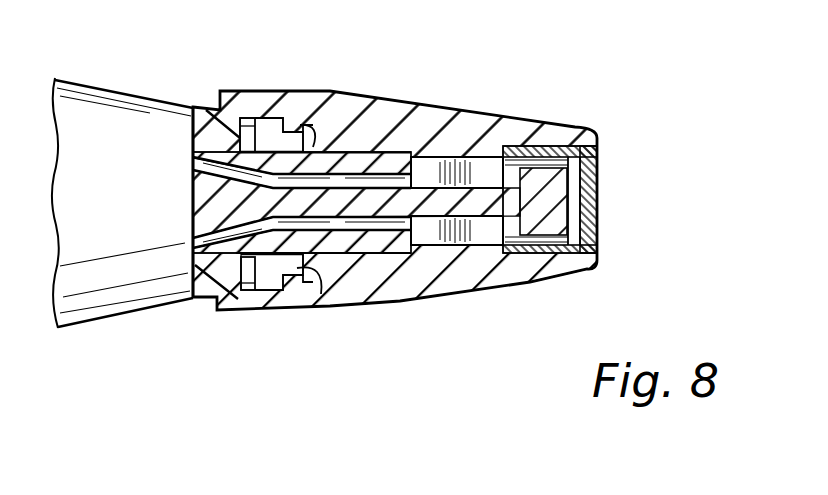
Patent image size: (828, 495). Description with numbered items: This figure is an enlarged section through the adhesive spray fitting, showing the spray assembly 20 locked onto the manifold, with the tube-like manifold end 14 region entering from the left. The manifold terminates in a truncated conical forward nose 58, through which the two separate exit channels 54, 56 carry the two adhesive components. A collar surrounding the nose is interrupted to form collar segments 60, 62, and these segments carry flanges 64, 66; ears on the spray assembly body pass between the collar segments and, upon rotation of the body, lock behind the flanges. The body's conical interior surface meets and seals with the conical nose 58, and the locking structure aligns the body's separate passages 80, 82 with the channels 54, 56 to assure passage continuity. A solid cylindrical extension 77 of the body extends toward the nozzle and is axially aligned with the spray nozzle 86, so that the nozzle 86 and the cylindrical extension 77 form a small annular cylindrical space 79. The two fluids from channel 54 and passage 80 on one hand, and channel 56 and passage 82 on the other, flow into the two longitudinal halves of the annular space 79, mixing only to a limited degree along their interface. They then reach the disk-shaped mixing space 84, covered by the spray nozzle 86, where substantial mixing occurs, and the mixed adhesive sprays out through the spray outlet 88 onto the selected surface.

The tube 14 is at (128, 92).
The spray assembly 20 is at (610, 290).
The exit channel 54 is at (410, 153).
The exit channel 56 is at (382, 224).
The truncated conical forward nose 58 is at (398, 178).
The collar segment 60 is at (241, 92).
The collar segment 62 is at (240, 316).
The flange 64 is at (315, 124).
The flange 66 is at (321, 292).
The solid cylindrical extension 77 is at (581, 124).
The annular cylindrical space 79 is at (561, 262).
The passage 80 is at (484, 166).
The passage 82 is at (473, 242).
The mixing space 84 is at (598, 167).
The spray nozzle 86 is at (598, 226).
The spray outlet 88 is at (599, 194).